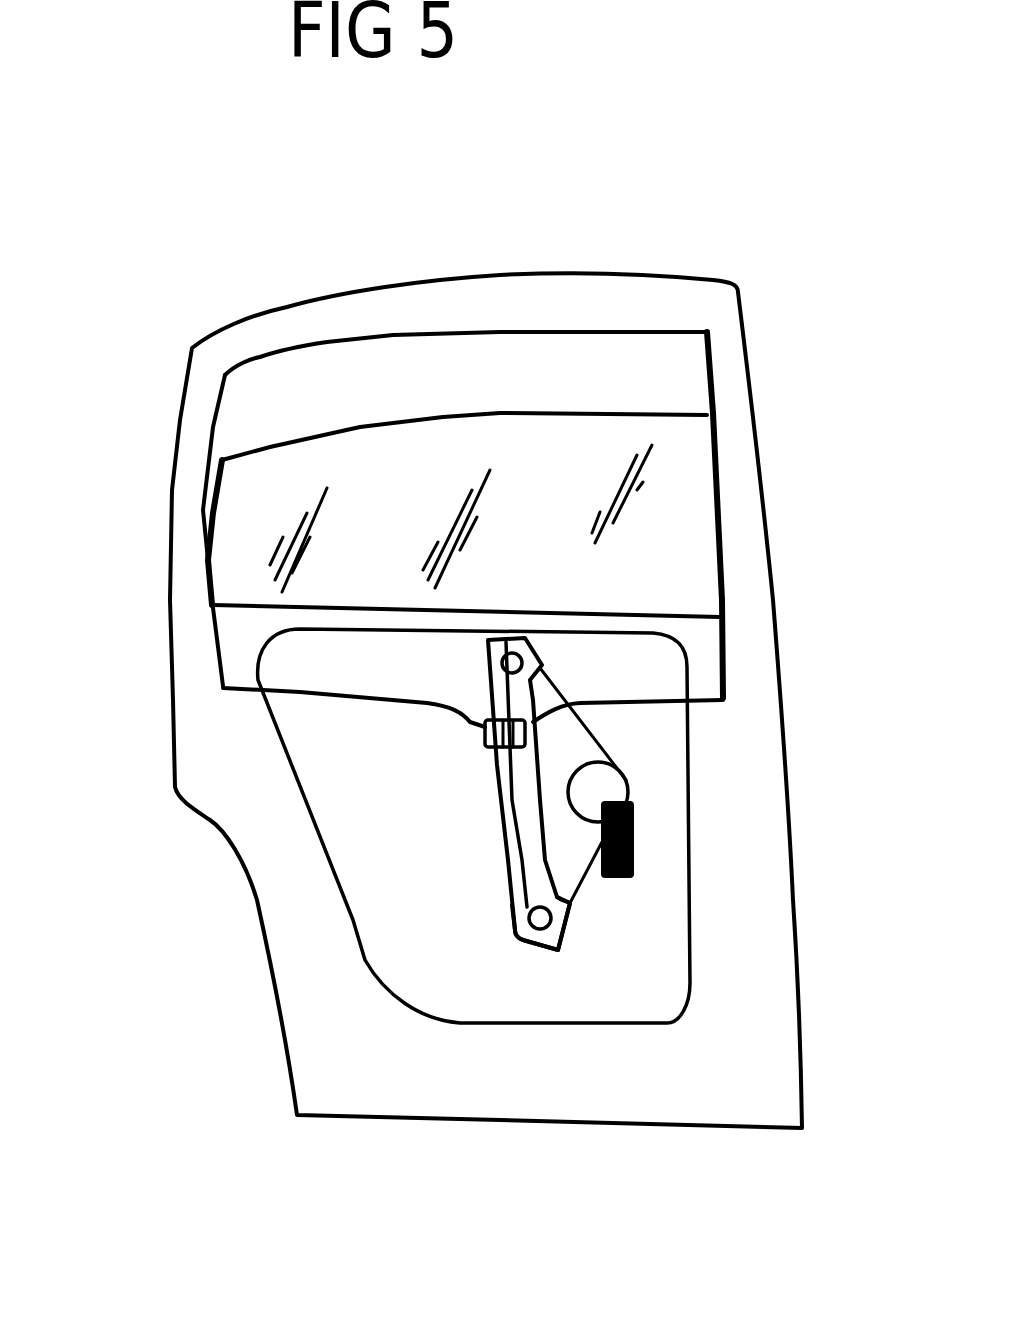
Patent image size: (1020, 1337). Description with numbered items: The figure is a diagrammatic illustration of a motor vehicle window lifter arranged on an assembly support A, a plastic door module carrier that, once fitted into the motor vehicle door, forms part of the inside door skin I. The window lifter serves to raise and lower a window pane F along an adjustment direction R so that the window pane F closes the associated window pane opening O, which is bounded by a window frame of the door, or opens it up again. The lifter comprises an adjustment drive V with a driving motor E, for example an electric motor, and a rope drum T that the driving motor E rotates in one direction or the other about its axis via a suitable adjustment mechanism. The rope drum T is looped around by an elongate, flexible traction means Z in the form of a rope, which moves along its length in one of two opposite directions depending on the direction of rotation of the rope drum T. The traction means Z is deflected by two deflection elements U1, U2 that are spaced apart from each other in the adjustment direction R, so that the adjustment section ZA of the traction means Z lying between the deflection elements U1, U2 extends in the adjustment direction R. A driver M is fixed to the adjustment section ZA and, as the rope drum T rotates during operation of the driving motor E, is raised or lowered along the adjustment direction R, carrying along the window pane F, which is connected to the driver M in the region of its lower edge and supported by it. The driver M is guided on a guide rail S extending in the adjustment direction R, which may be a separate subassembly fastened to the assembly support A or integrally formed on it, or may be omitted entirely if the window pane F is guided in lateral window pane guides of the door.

The window pane opening O is at (607, 333).
The window pane F is at (697, 632).
The inside door skin I is at (762, 1058).
The assembly support A is at (367, 923).
The adjustment section ZA is at (510, 845).
The guide rail S is at (510, 908).
The deflection element U1 is at (503, 660).
The deflection element U2 is at (540, 920).
The driver M is at (485, 727).
The adjustment direction R is at (388, 747).
The traction means Z is at (587, 737).
The rope drum T is at (603, 780).
The driving motor E is at (613, 878).
The adjustment drive V is at (645, 828).